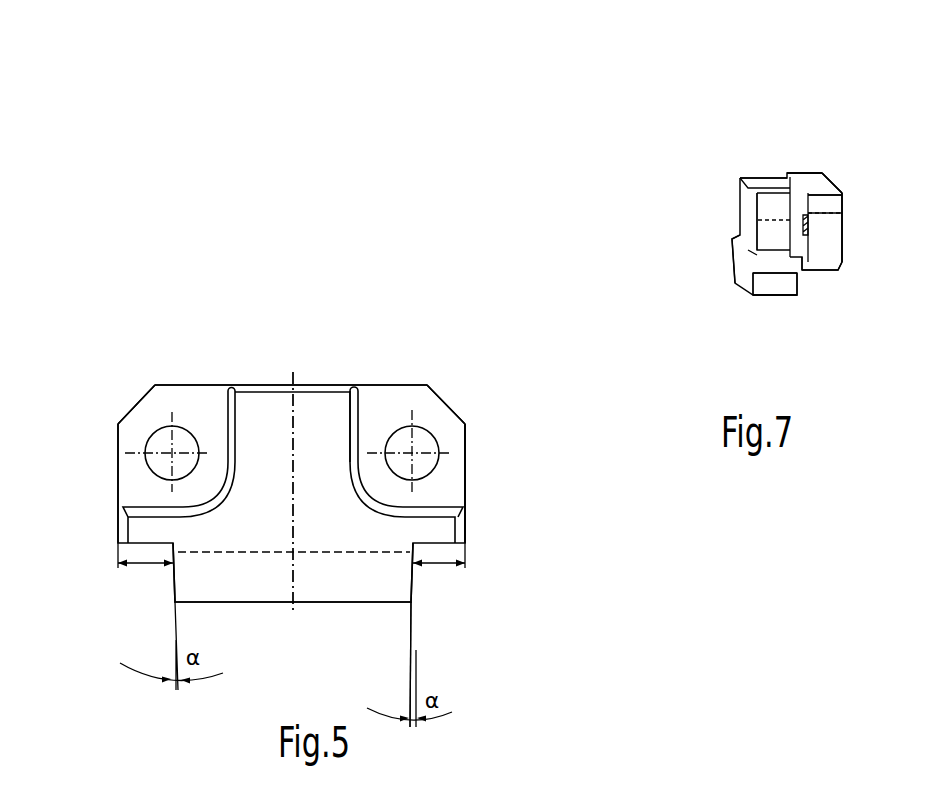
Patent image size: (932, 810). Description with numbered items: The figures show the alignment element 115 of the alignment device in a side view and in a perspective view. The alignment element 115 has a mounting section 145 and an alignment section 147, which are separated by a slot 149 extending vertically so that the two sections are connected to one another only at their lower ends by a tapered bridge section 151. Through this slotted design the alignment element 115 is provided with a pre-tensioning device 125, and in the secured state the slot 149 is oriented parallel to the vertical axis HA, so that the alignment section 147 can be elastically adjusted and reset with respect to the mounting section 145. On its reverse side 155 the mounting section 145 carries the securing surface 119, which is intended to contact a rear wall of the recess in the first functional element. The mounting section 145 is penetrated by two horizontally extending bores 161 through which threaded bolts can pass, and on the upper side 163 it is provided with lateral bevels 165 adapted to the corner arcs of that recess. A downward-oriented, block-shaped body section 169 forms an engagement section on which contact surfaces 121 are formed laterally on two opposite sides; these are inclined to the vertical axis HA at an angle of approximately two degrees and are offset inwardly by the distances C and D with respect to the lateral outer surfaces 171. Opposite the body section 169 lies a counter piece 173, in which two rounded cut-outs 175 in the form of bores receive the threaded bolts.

In FIG. 5, the alignment element 115 is at (341, 373).
In FIG. 7, the alignment element 115 is at (853, 182).
In FIG. 7, the securing surface 119 is at (833, 203).
In FIG. 5, the contact surfaces 121 is at (415, 590).
In FIG. 7, the contact surfaces 121 is at (772, 292).
In FIG. 7, the pre-tensioning device 125 is at (815, 277).
In FIG. 5, the mounting section 145 is at (465, 438).
In FIG. 7, the mounting section 145 is at (843, 250).
In FIG. 5, the alignment section 147 is at (258, 408).
In FIG. 7, the alignment section 147 is at (762, 175).
In FIG. 7, the slot 149 is at (798, 175).
In FIG. 7, the bridge section 151 is at (808, 272).
In FIG. 7, the reverse side 155 is at (845, 233).
In FIG. 5, the bores 161 is at (158, 443).
In FIG. 7, the bores 161 is at (833, 192).
In FIG. 5, the upper side 163 is at (313, 386).
In FIG. 7, the upper side 163 is at (818, 175).
In FIG. 5, the lateral bevels 165 is at (130, 408).
In FIG. 7, the lateral bevels 165 is at (857, 196).
In FIG. 5, the body section 169 is at (343, 580).
In FIG. 7, the body section 169 is at (740, 280).
In FIG. 5, the lateral outer surfaces 171 is at (118, 480).
In FIG. 7, the lateral outer surfaces 171 is at (838, 266).
In FIG. 5, the counter piece 173 is at (340, 420).
In FIG. 7, the counter piece 173 is at (765, 207).
In FIG. 5, the rounded cut-outs 175 is at (207, 408).
In FIG. 7, the rounded cut-outs 175 is at (743, 275).
In FIG. 5, the vertical axis HA is at (288, 568).
In FIG. 5, the distance C is at (143, 568).
In FIG. 5, the distance D is at (440, 567).